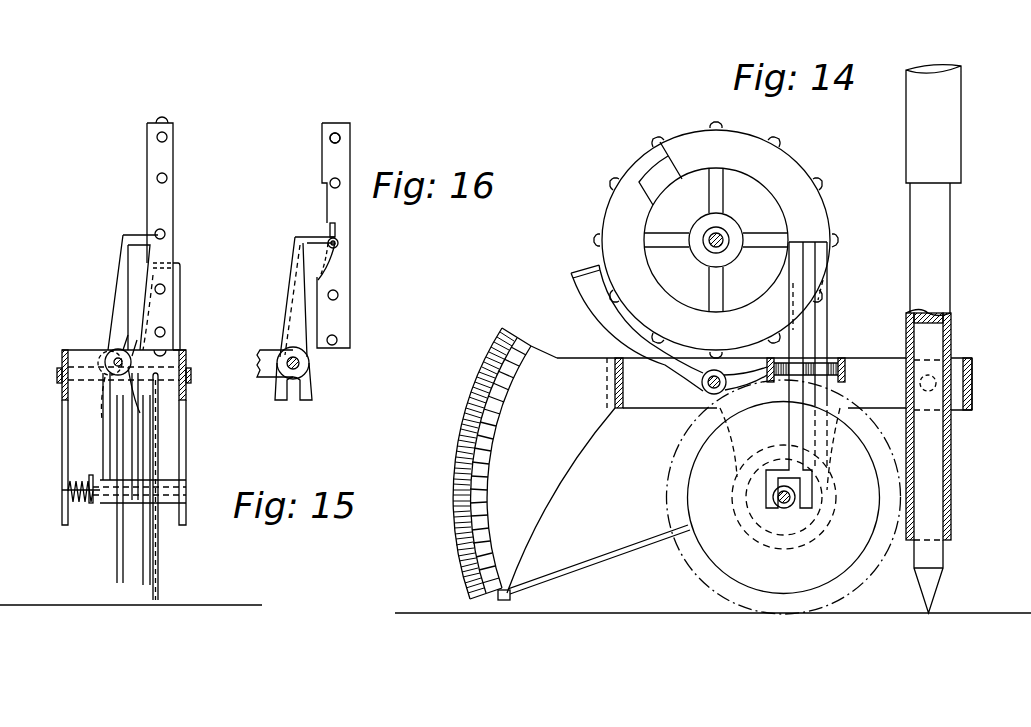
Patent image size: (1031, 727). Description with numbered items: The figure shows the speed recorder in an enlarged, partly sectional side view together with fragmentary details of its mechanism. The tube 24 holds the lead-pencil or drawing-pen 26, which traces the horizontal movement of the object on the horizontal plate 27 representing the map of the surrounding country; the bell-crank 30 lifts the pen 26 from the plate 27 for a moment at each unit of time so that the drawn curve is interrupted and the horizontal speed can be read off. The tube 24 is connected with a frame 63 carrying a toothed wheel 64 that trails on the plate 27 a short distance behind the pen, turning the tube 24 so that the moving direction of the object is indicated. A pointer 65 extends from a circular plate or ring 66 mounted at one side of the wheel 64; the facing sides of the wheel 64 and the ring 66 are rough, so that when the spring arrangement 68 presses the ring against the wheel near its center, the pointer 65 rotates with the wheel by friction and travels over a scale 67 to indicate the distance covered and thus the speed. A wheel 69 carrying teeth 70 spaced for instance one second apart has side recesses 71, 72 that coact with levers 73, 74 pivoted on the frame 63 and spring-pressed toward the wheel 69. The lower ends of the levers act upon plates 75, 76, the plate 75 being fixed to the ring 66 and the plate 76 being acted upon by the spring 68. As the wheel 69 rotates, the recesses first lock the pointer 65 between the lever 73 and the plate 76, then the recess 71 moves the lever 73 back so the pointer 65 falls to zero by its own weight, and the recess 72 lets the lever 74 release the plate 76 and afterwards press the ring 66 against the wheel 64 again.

In FIG. 14, the tube 24 is at (952, 458).
In FIG. 14, the drawing-pen 26 is at (932, 558).
In FIG. 14, the horizontal plate 27 is at (988, 613).
In FIG. 15, the horizontal plate 27 is at (222, 605).
In FIG. 14, the bell-crank 30 is at (595, 309).
In FIG. 14, the frame 63 is at (668, 406).
In FIG. 15, the frame 63 is at (62, 357).
In FIG. 14, the toothed wheel 64 is at (725, 597).
In FIG. 15, the toothed wheel 64 is at (159, 582).
In FIG. 14, the pointer 65 is at (579, 563).
In FIG. 14, the circular plate or ring 66 is at (713, 545).
In FIG. 15, the circular plate or ring 66 is at (140, 587).
In FIG. 14, the scale 67 is at (457, 482).
In FIG. 15, the spring arrangement 68 is at (77, 500).
In FIG. 14, the wheel 69 is at (645, 153).
In FIG. 15, the wheel 69 is at (168, 157).
In FIG. 16, the wheel 69 is at (327, 162).
In FIG. 14, the teeth 70 is at (613, 178).
In FIG. 15, the teeth 70 is at (186, 236).
In FIG. 16, the teeth 70 is at (330, 138).
In FIG. 14, the recess 71 is at (808, 270).
In FIG. 14, the recess 72 is at (773, 297).
In FIG. 14, the lever 73 is at (828, 337).
In FIG. 15, the lever 73 is at (139, 450).
In FIG. 16, the lever 73 is at (311, 392).
In FIG. 14, the lever 74 is at (793, 330).
In FIG. 15, the lever 74 is at (100, 437).
In FIG. 16, the lever 74 is at (276, 393).
In FIG. 15, the plate 75 is at (117, 575).
In FIG. 15, the plate 76 is at (93, 505).